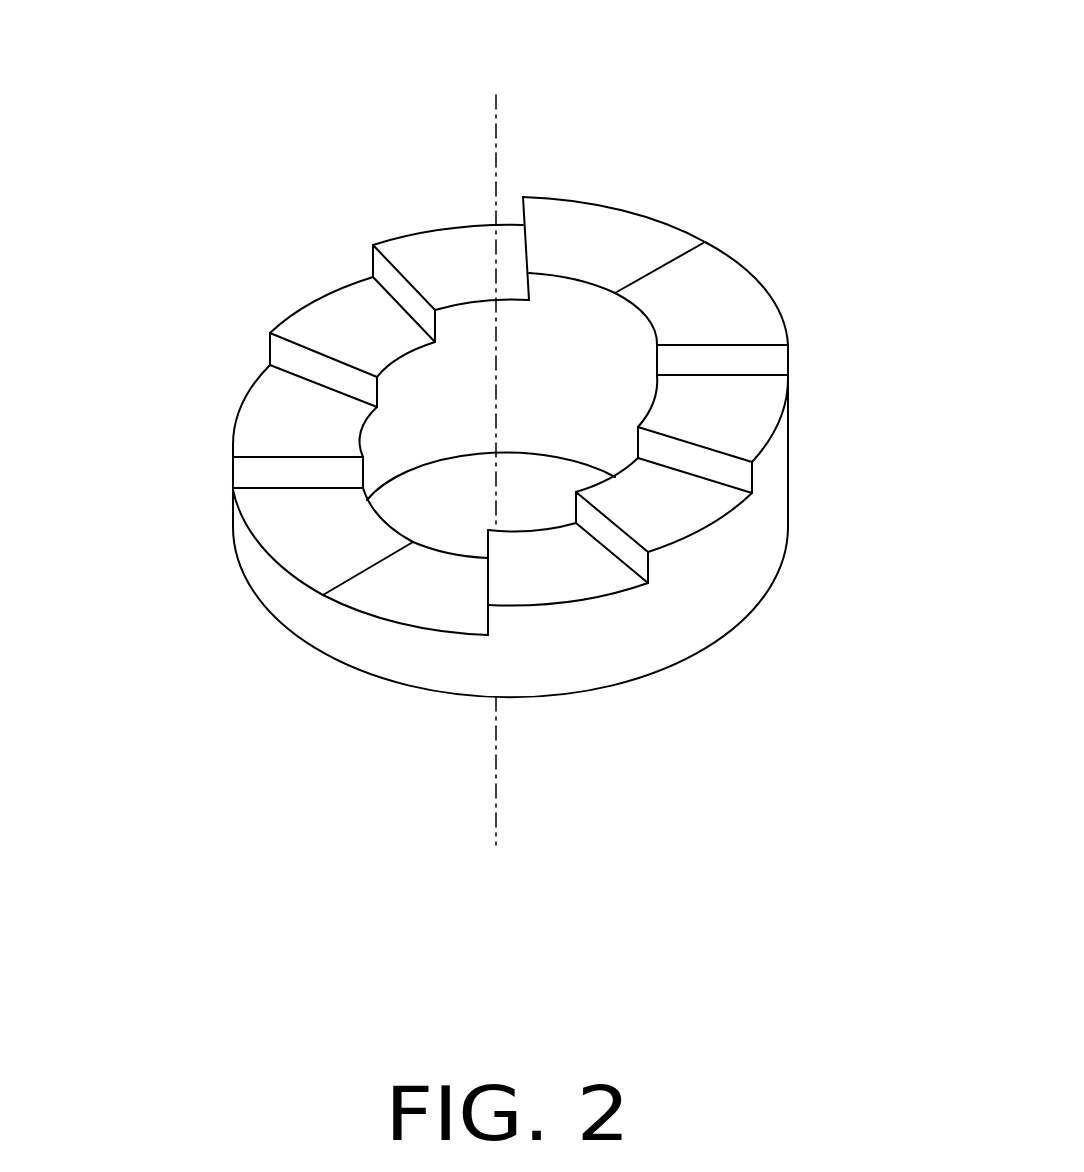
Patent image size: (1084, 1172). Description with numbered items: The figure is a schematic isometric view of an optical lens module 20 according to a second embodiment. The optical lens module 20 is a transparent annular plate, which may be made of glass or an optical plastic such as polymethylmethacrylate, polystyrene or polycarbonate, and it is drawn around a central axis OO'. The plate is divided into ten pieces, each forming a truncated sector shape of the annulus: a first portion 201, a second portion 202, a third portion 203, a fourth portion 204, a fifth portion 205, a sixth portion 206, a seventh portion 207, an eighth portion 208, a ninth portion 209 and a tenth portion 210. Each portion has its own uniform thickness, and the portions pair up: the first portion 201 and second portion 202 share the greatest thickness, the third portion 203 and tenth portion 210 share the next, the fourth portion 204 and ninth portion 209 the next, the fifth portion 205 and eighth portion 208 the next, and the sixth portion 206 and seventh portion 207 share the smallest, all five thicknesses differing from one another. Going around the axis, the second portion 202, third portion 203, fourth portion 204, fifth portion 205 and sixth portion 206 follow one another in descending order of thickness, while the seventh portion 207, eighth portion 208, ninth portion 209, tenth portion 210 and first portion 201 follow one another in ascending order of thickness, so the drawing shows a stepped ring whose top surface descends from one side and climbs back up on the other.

The optical lens module 20 is at (590, 87).
The first portion 201 is at (582, 230).
The second portion 202 is at (732, 297).
The third portion 203 is at (747, 422).
The fourth portion 204 is at (673, 508).
The fifth portion 205 is at (577, 572).
The sixth portion 206 is at (418, 600).
The seventh portion 207 is at (287, 537).
The eighth portion 208 is at (268, 417).
The ninth portion 209 is at (342, 315).
The tenth portion 210 is at (440, 247).